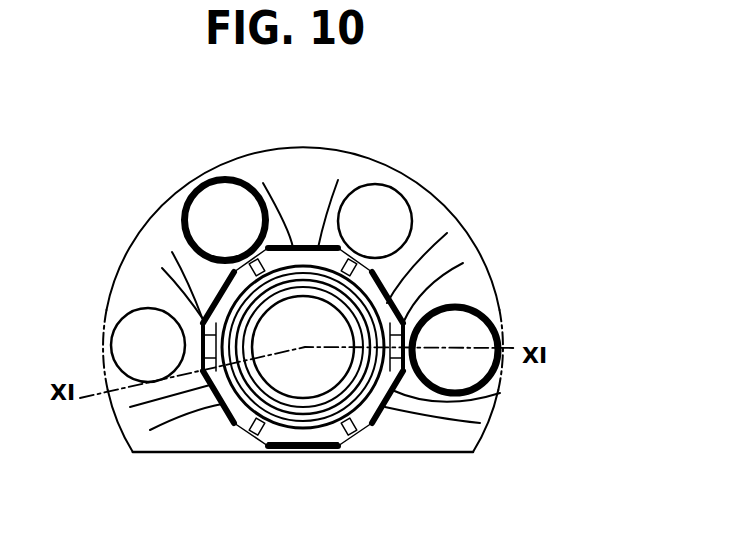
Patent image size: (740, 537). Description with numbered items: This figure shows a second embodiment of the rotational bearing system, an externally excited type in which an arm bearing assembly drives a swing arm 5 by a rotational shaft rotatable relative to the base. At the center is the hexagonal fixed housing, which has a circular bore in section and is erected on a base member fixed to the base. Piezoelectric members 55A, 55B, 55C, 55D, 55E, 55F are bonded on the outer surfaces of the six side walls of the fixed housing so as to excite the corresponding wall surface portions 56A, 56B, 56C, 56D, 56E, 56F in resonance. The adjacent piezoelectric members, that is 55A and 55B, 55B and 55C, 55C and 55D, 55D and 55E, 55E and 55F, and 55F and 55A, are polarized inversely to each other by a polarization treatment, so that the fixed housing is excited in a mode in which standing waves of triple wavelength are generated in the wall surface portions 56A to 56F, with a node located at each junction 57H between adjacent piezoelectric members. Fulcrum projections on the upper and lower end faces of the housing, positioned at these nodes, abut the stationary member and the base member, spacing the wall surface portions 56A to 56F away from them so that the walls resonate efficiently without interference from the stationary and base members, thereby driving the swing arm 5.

The swing arm 5 is at (380, 443).
The piezoelectric member 55A is at (317, 447).
The piezoelectric member 55B is at (500, 393).
The piezoelectric member 55C is at (447, 233).
The piezoelectric member 55D is at (338, 180).
The piezoelectric member 55E is at (162, 268).
The piezoelectric member 55F is at (130, 407).
The wall surface portion 56A is at (285, 443).
The wall surface portion 56B is at (480, 423).
The wall surface portion 56C is at (463, 263).
The wall surface portion 56D is at (263, 183).
The wall surface portion 56E is at (172, 252).
The wall surface portion 56F is at (150, 430).
The junction 57H is at (470, 302).